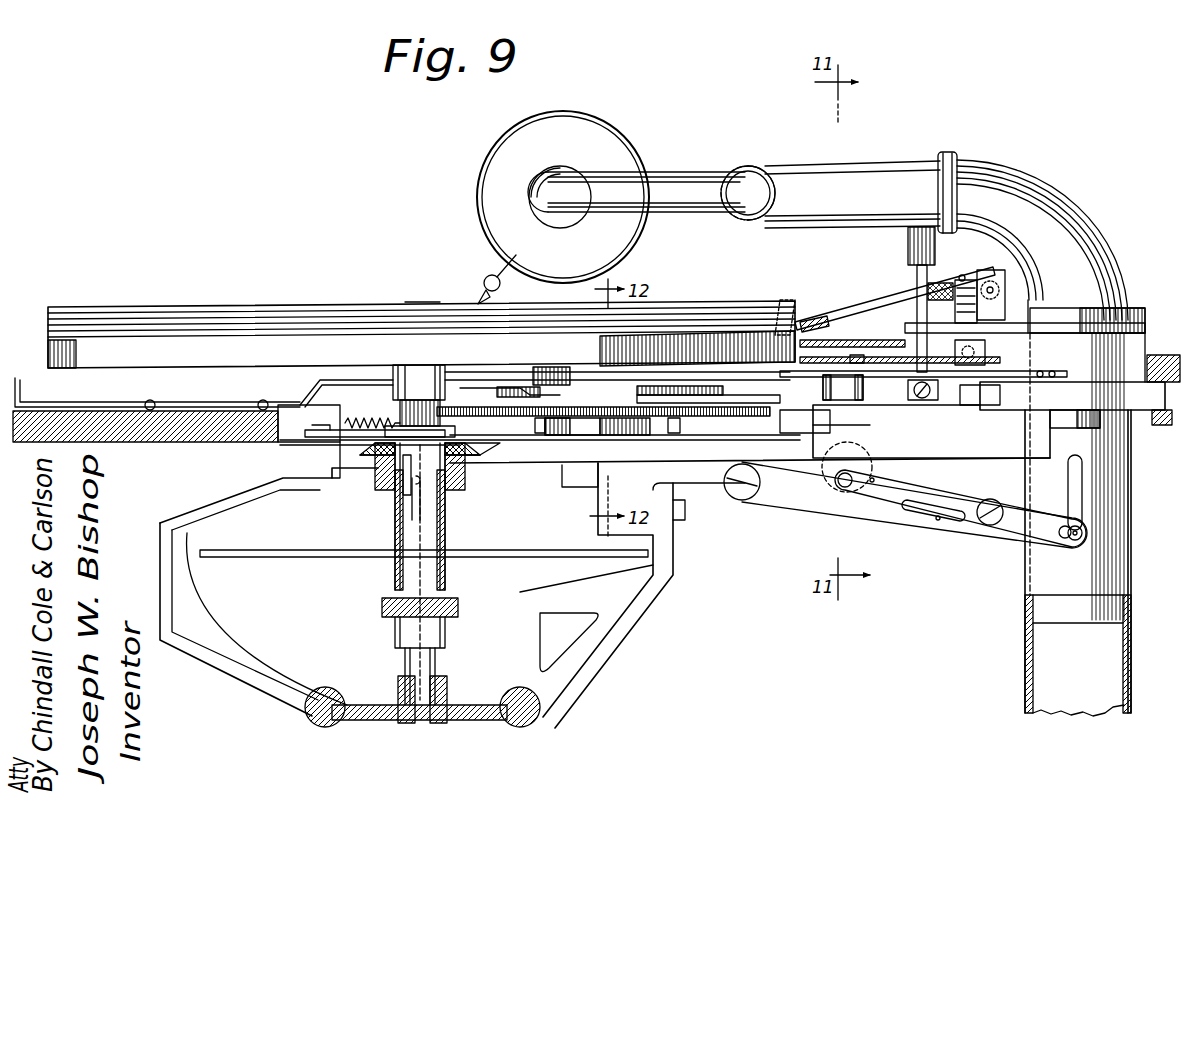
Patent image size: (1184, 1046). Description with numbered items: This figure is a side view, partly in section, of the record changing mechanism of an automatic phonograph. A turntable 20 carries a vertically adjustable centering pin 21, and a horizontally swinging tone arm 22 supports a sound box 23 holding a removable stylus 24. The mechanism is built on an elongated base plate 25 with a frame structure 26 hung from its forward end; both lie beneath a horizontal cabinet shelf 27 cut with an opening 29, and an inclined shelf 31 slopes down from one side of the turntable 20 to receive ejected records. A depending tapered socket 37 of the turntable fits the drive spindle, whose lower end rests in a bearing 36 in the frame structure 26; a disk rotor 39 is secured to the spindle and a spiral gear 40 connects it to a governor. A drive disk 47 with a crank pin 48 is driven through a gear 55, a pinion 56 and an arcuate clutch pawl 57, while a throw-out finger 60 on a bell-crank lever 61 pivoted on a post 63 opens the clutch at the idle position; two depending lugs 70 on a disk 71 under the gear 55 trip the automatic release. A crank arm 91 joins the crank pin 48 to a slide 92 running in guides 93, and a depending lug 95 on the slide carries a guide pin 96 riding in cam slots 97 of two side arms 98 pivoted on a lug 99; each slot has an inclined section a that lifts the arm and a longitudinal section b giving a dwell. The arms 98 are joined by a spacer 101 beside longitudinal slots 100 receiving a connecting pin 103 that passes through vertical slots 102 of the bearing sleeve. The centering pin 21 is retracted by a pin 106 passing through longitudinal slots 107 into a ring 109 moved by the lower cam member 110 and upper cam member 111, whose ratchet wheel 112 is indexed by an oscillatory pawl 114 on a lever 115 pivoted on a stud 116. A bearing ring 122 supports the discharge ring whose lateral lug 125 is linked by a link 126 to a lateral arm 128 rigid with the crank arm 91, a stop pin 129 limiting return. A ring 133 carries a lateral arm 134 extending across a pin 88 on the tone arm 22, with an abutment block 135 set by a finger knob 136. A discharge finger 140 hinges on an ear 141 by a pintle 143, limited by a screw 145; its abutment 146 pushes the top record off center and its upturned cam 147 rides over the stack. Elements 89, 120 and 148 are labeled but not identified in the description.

The turntable 20 is at (222, 368).
The centering pin 21 is at (418, 304).
The tone arm 22 is at (992, 170).
The sound box 23 is at (672, 180).
The stylus 24 is at (484, 283).
The base plate 25 is at (536, 466).
The frame structure 26 is at (190, 590).
The shelf 27 is at (198, 442).
The opening 29 is at (252, 444).
The inclined shelf 31 is at (405, 660).
The bearing 36 is at (450, 693).
The tapered socket 37 is at (447, 372).
The disk rotor 39 is at (254, 554).
The spiral gear 40 is at (382, 608).
The drive disk 47 is at (480, 388).
The crank pin 48 is at (570, 372).
The gear 55 is at (532, 420).
The pinion 56 is at (399, 412).
The clutch pawl 57 is at (500, 397).
The throw-out abutment 60 is at (642, 387).
The bell-crank lever 61 is at (748, 394).
The post 63 is at (808, 420).
The lugs 70 is at (548, 440).
The disk 71 is at (603, 438).
The pin 88 is at (916, 276).
The screw 89 is at (938, 392).
The crank arm 91 is at (698, 387).
The slide 92 is at (864, 385).
The guides 93 is at (945, 418).
The depending lug 95 is at (862, 476).
The guide pin 96 is at (840, 502).
The cam slots 97 is at (908, 522).
The side arms 98 is at (781, 506).
The lug 99 is at (730, 476).
The longitudinal slots 100 is at (1070, 531).
The spacer 101 is at (992, 499).
The vertical slots 102 is at (1085, 483).
The connecting pin 103 is at (1083, 533).
The pin 106 is at (404, 500).
The longitudinal slots 107 is at (400, 518).
The ring 109 is at (375, 488).
The lower cam member 110 is at (475, 452).
The upper cam member 111 is at (375, 450).
The ratchet wheel 112 is at (1118, 302).
The oscillatory pawl 114 is at (340, 438).
The lever 115 is at (1025, 565).
The stud 116 is at (1025, 662).
The spring 120 is at (356, 420).
The bearing ring 122 is at (1140, 398).
The lateral lug 125 is at (1046, 379).
The link 126 is at (982, 380).
The lateral arm 128 is at (782, 383).
The stop pin 129 is at (898, 358).
The ring 133 is at (1122, 320).
The lateral arm 134 is at (916, 345).
The abutment block 135 is at (979, 351).
The finger knob 136 is at (952, 268).
The discharge finger 140 is at (852, 316).
The ear 141 is at (1006, 290).
The pintle 143 is at (978, 286).
The screw 145 is at (964, 275).
The abutment 146 is at (812, 333).
The cam 147 is at (790, 302).
The lug 148 is at (858, 355).
The inclined section a is at (875, 508).
The longitudinal section b is at (937, 526).